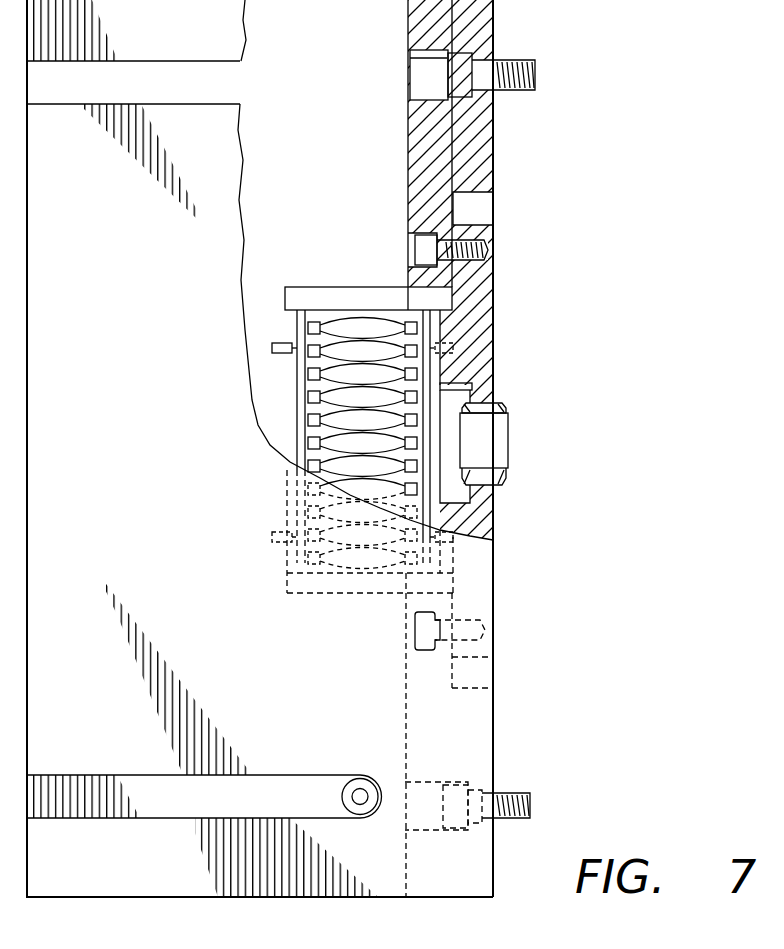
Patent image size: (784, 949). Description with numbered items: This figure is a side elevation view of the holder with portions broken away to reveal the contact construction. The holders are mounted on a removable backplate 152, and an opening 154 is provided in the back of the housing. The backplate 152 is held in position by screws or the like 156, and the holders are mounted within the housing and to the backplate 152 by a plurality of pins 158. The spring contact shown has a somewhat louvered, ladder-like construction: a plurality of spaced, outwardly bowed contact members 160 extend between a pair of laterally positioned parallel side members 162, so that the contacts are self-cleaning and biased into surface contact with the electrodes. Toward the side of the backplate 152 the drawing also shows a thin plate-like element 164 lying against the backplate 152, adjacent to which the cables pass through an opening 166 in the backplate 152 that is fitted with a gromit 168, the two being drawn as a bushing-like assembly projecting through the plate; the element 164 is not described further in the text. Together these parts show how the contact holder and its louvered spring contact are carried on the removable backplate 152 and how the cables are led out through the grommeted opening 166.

The removable backplate 152 is at (483, 357).
The opening 154 is at (483, 212).
The screws 156 is at (412, 241).
The pins 158 is at (272, 348).
The outwardly bowed contact members 160 is at (330, 398).
The parallel side members 162 is at (322, 443).
The shim plate 164 is at (330, 398).
The opening 166 is at (478, 422).
The gromit 168 is at (490, 456).